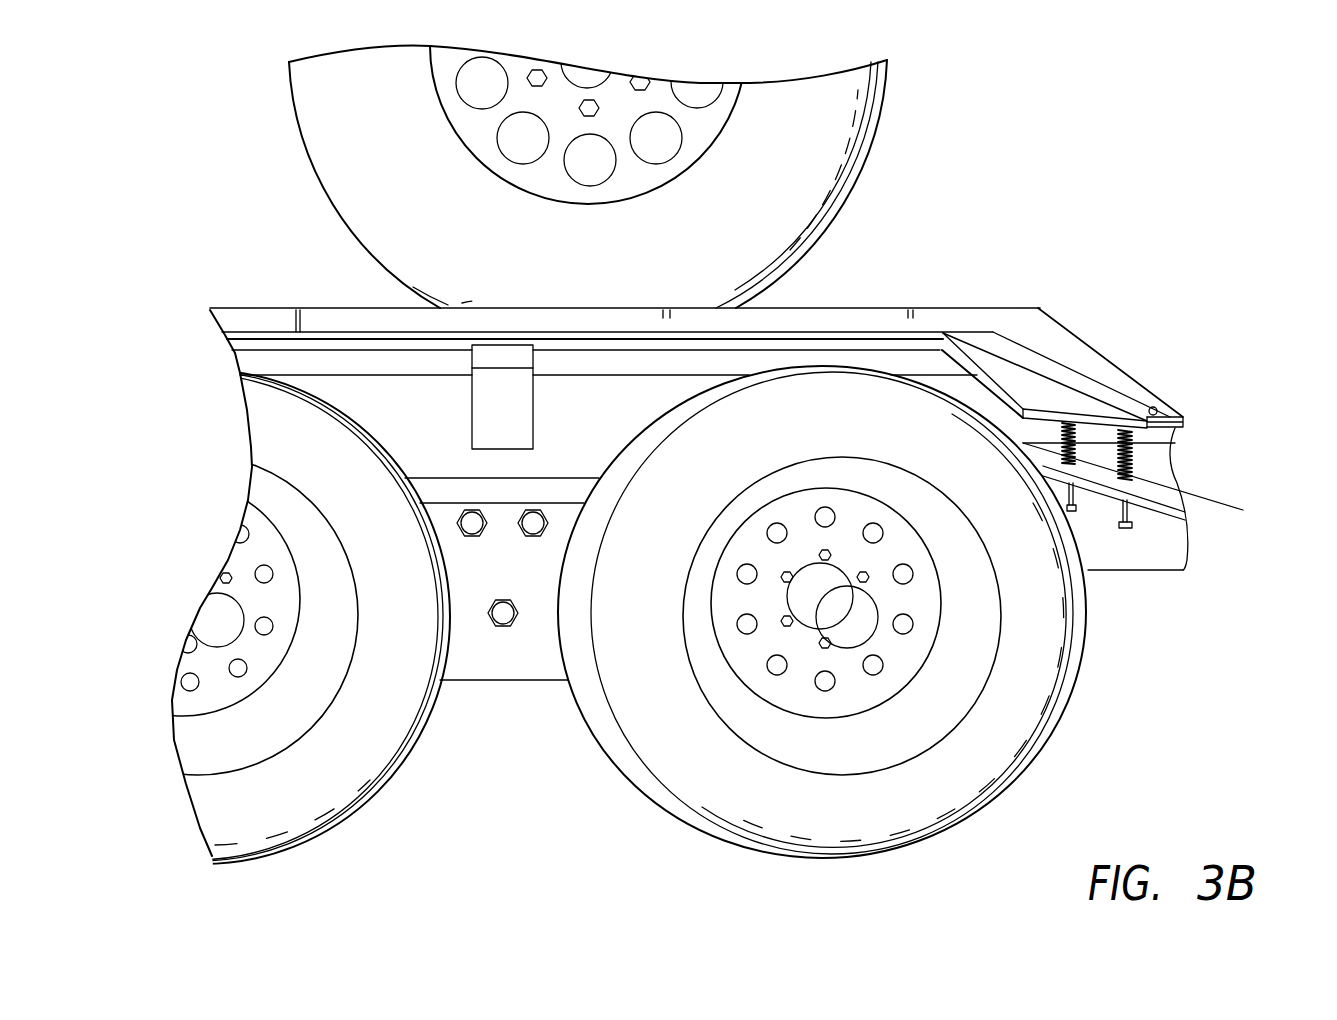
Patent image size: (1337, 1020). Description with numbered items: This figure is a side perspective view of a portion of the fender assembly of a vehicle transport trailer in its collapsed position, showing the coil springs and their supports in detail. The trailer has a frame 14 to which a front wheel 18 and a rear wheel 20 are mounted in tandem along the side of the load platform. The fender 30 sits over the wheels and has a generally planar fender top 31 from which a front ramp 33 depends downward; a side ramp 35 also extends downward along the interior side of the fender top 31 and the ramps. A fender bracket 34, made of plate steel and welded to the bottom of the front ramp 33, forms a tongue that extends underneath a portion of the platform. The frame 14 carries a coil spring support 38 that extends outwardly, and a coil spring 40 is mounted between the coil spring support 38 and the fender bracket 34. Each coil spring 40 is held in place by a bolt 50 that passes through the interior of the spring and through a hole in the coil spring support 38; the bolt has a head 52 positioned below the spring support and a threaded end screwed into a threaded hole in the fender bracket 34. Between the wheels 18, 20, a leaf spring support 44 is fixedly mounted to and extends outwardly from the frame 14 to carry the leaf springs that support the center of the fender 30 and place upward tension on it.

The frame 14 is at (390, 397).
The front wheel 18 is at (955, 642).
The rear wheel 20 is at (319, 648).
The fender 30 is at (875, 306).
The fender top 31 is at (923, 308).
The front ramp 33 is at (1112, 361).
The fender bracket 34 is at (1173, 427).
The side ramp 35 is at (1000, 362).
The coil spring support 38 is at (1095, 488).
The coil spring 40 is at (1130, 462).
The leaf spring support 44 is at (491, 421).
The bolt 50 is at (1130, 515).
The head 52 is at (1122, 528).